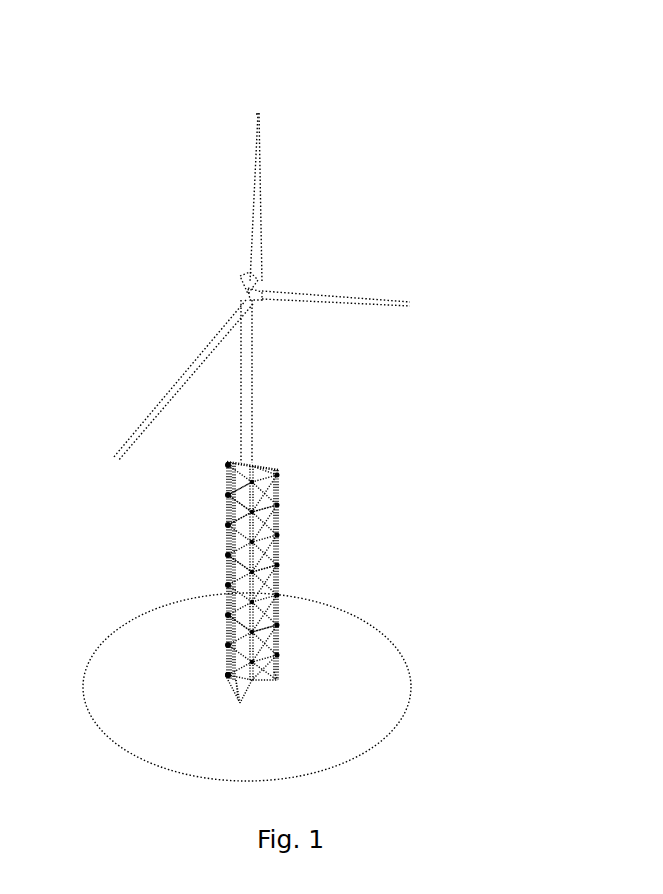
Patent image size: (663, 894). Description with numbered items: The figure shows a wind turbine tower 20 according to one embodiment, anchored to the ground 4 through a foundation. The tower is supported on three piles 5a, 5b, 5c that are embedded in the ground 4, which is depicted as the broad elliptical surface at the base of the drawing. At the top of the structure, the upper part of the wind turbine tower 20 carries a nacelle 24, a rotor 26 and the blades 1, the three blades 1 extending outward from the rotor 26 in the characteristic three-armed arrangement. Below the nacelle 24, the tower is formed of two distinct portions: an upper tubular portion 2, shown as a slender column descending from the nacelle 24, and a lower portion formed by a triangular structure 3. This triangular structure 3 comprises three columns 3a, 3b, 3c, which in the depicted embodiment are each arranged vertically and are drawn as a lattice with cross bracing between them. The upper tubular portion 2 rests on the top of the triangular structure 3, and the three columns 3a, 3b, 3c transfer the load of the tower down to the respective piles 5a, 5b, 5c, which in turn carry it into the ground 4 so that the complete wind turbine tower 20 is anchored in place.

The blades 1 is at (283, 411).
The wind turbine tower 20 is at (287, 232).
The nacelle 24 is at (235, 278).
The rotor 26 is at (262, 293).
The upper tubular portion 2 is at (252, 412).
The triangular structure 3 is at (283, 520).
The column 3a is at (238, 632).
The column 3b is at (278, 580).
The column 3c is at (230, 568).
The ground 4 is at (348, 640).
The pile 5a is at (243, 701).
The pile 5b is at (273, 682).
The pile 5c is at (233, 675).